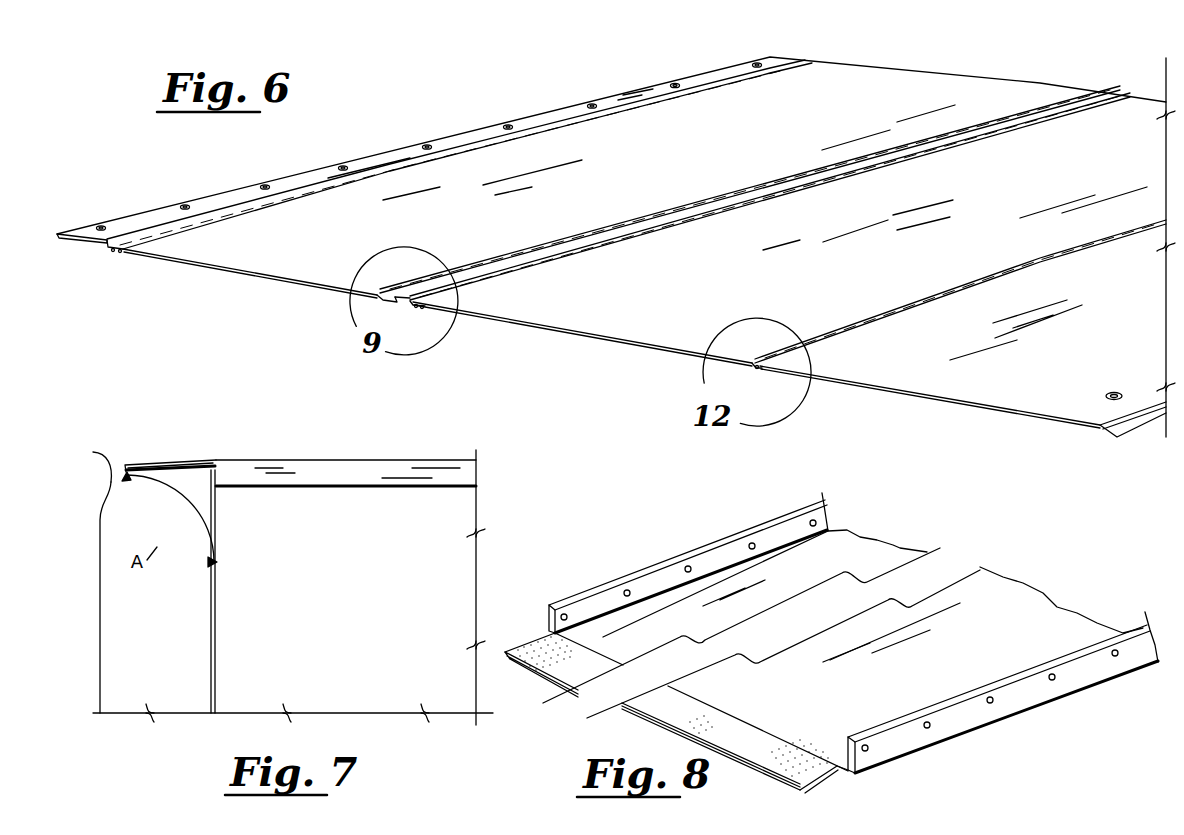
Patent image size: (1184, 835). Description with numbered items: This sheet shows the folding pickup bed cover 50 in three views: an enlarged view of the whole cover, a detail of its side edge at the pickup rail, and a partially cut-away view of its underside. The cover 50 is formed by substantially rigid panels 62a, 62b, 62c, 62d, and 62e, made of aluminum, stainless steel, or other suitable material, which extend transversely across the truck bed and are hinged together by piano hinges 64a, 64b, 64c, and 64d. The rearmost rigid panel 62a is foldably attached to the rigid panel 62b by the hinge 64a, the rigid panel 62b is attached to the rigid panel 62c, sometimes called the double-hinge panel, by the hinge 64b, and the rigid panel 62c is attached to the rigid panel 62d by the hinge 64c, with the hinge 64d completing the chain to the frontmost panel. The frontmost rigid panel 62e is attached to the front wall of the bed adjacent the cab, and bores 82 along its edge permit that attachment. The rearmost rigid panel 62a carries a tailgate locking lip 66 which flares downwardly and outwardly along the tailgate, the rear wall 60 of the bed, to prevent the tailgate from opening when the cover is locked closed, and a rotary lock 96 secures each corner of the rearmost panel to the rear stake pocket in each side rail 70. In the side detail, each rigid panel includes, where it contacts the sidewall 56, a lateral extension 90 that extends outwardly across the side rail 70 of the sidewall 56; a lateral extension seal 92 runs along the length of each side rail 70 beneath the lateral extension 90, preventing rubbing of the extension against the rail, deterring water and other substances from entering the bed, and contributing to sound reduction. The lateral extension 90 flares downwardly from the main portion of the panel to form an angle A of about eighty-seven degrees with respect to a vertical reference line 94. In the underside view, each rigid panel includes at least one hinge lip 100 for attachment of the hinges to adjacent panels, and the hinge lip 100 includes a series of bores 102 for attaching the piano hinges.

In FIG. 6, the folding pickup bed cover 50 is at (379, 114).
In FIG. 6, the bores 82 is at (185, 204).
In FIG. 6, the rearmost rigid panel 62a is at (930, 397).
In FIG. 6, the rigid panel 62b is at (567, 332).
In FIG. 6, the rigid panel 62c is at (550, 252).
In FIG. 6, the rigid panel 62d is at (267, 276).
In FIG. 6, the frontmost rigid panel 62e is at (75, 243).
In FIG. 6, the hinge 64a is at (937, 298).
In FIG. 6, the hinge 64b is at (643, 232).
In FIG. 6, the hinge 64c is at (644, 218).
In FIG. 6, the hinge 64d is at (588, 123).
In FIG. 6, the rotary lock 96 is at (1113, 389).
In FIG. 6, the tailgate locking lip 66 is at (1133, 422).
In FIG. 7, the tailgate locking lip 66 is at (338, 470).
In FIG. 7, the side rail 70 is at (91, 462).
In FIG. 7, the lateral extension 90 is at (150, 461).
In FIG. 8, the lateral extension 90 is at (822, 795).
In FIG. 7, the lateral extension seal 92 is at (186, 478).
In FIG. 8, the lateral extension seal 92 is at (738, 728).
In FIG. 7, the vertical reference line 94 is at (217, 534).
In FIG. 7, the sidewall 56 is at (100, 610).
In FIG. 7, the rear wall 60 is at (333, 586).
In FIG. 8, the hinge lip 100 is at (672, 556).
In FIG. 8, the bores 102 is at (627, 589).